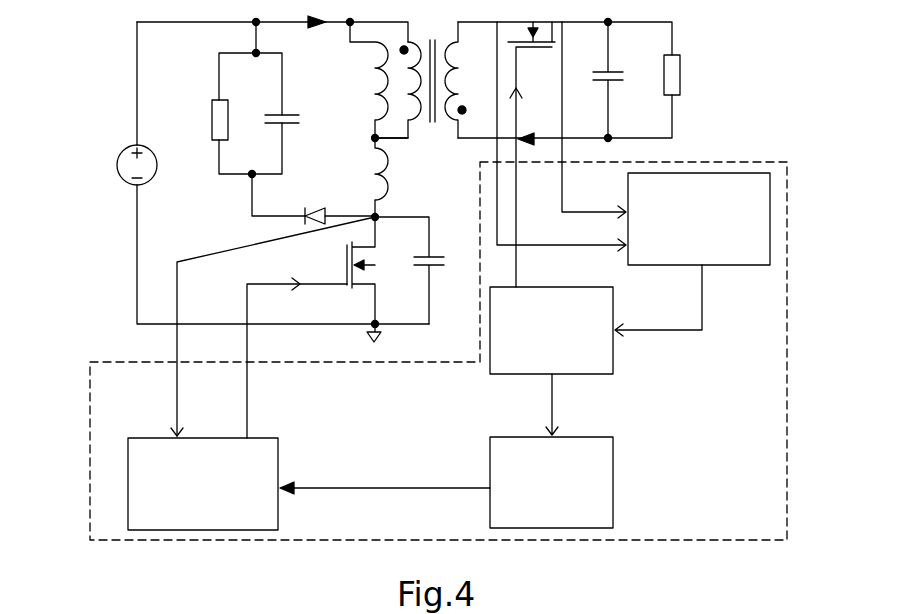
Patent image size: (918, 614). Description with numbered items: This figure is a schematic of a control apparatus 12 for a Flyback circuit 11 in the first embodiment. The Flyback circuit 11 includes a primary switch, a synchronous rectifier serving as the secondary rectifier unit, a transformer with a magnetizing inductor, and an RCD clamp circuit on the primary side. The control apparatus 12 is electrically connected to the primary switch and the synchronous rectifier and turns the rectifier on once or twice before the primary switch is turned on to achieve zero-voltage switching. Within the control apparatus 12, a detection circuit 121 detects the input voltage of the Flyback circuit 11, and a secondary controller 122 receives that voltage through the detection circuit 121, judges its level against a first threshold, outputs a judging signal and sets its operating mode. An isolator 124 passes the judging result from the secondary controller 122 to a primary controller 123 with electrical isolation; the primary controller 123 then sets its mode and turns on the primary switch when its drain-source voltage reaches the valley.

The Flyback circuit 11 is at (123, 93).
The control apparatus 12 is at (708, 162).
The detection circuit 121 is at (772, 175).
The secondary controller 122 is at (615, 372).
The primary controller 123 is at (128, 437).
The isolator 124 is at (613, 437).